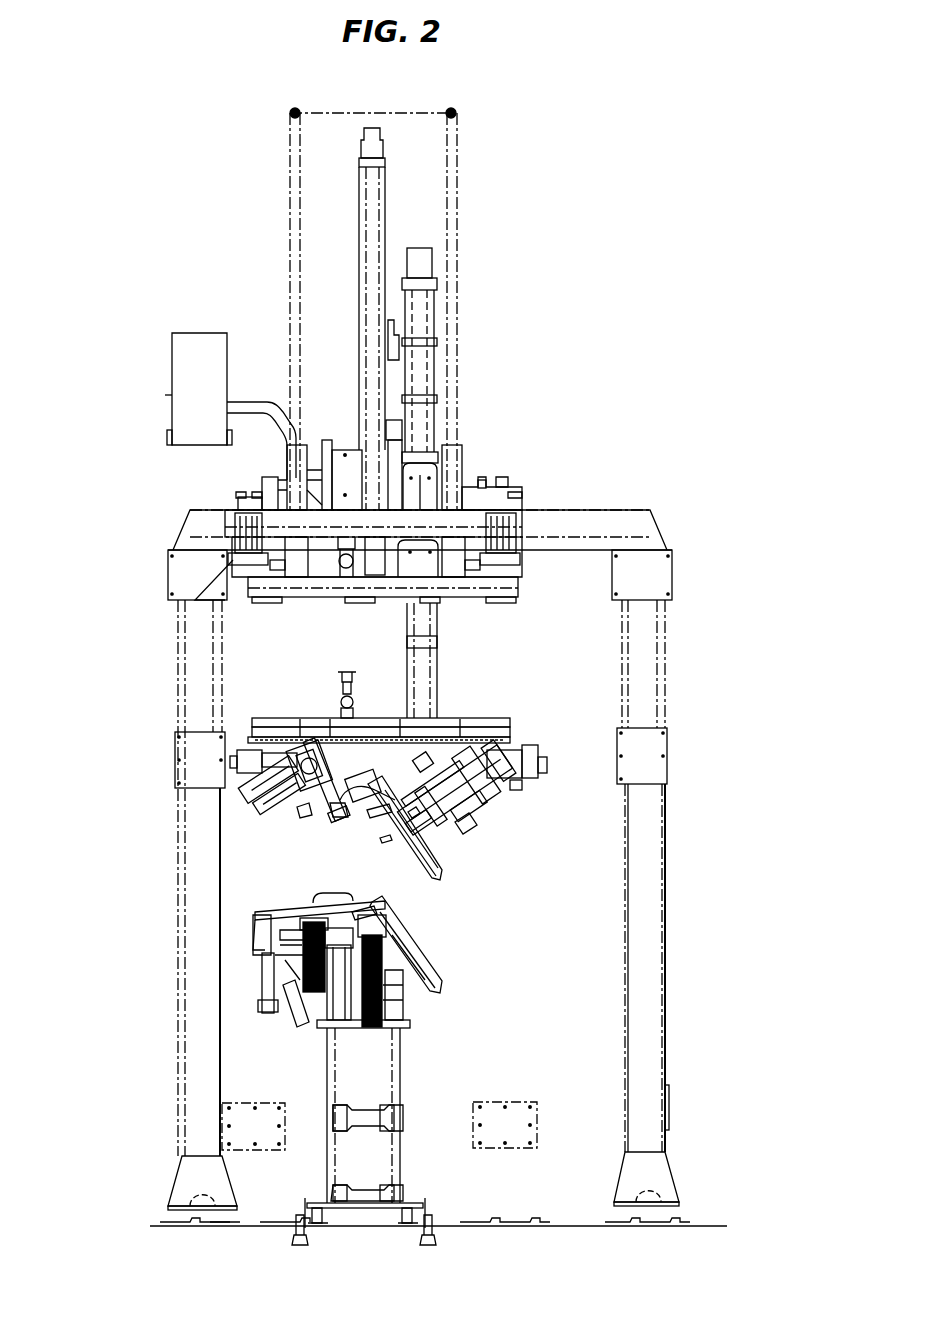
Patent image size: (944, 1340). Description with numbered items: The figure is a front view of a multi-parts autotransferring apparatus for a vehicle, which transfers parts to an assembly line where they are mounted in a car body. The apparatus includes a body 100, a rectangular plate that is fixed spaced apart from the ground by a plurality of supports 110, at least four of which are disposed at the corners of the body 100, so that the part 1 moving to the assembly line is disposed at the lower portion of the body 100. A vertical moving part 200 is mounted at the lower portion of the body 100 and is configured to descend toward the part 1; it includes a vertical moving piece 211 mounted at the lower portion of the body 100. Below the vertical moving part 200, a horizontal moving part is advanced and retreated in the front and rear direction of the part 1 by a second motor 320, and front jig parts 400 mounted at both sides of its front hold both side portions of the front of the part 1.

The part 1 is at (416, 880).
The body 100 is at (195, 517).
The support 110 is at (195, 830).
The vertical moving part 200 is at (500, 700).
The vertical moving piece 211 is at (425, 368).
The second motor 320 is at (532, 760).
The front jig part 400 is at (478, 845).